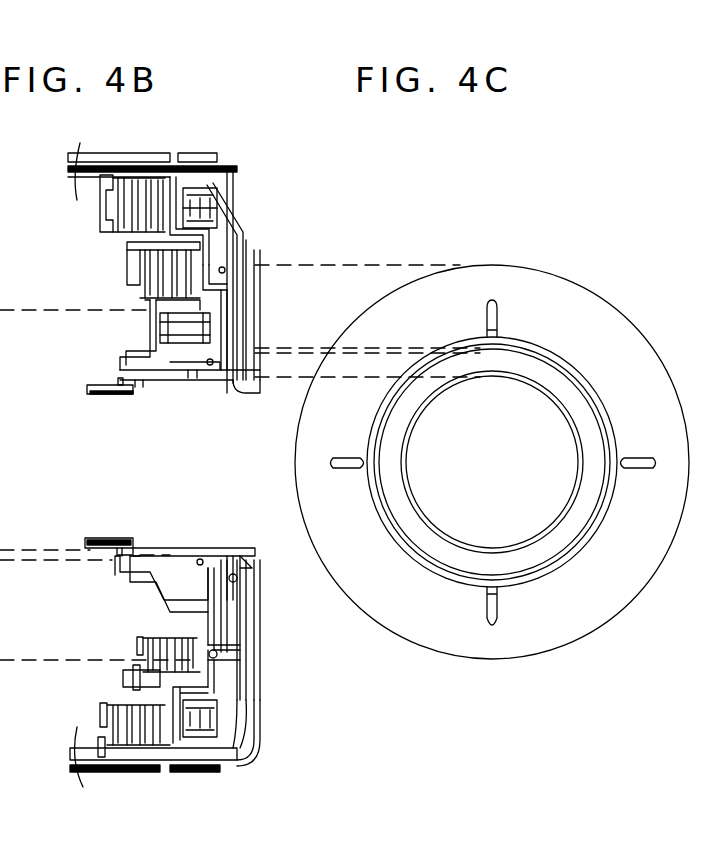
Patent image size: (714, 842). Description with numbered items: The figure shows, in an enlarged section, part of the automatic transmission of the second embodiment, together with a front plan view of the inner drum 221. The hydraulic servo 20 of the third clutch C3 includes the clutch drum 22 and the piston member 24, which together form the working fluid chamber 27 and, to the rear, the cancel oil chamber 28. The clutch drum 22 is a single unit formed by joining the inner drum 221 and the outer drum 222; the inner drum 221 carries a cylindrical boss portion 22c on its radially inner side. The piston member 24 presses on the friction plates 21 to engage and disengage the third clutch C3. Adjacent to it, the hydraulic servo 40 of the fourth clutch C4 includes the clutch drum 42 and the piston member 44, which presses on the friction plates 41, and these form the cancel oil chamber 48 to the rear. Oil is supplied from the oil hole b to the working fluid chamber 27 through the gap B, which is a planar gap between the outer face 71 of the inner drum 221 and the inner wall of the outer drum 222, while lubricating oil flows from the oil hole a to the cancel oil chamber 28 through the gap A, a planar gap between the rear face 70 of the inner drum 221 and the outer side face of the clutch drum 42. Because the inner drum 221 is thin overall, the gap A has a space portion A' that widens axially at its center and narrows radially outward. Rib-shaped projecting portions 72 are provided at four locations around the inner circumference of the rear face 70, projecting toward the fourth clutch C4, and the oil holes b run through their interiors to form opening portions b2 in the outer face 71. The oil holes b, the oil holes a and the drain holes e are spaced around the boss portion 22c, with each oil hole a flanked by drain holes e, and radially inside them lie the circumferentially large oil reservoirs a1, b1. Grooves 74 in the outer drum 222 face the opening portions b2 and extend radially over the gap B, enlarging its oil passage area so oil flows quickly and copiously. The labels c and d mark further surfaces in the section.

In FIG. 4B, the hydraulic servo 20 is at (252, 248).
In FIG. 4B, the friction plates 21 is at (88, 217).
In FIG. 4B, the clutch drum 22 is at (257, 673).
In FIG. 4B, the inner drum 221 is at (250, 570).
In FIG. 4C, the inner drum 221 is at (620, 180).
In FIG. 4B, the outer drum 222 is at (233, 730).
In FIG. 4B, the boss portion 22c is at (150, 380).
In FIG. 4B, the piston member 24 is at (213, 263).
In FIG. 4B, the working fluid chamber 27 is at (240, 677).
In FIG. 4B, the cancel oil chamber 28 is at (193, 727).
In FIG. 4B, the hydraulic servo 40 is at (233, 297).
In FIG. 4B, the friction plates 41 is at (125, 285).
In FIG. 4B, the clutch drum 42 is at (233, 627).
In FIG. 4B, the piston member 44 is at (232, 240).
In FIG. 4B, the cancel oil chamber 48 is at (175, 593).
In FIG. 4B, the rear face 70 is at (233, 590).
In FIG. 4C, the outer face 71 is at (593, 587).
In FIG. 4B, the projecting portions 72 is at (222, 370).
In FIG. 4B, the grooves 74 is at (265, 313).
In FIG. 4B, the gap A is at (258, 258).
In FIG. 4B, the space portion A' is at (252, 590).
In FIG. 4B, the gap B is at (253, 650).
In FIG. 4B, the oil hole a is at (233, 557).
In FIG. 4B, the oil reservoir a1 is at (213, 557).
In FIG. 4B, the oil hole b is at (233, 337).
In FIG. 4B, the oil reservoir b1 is at (262, 387).
In FIG. 4C, the opening portions b2 is at (676, 322).
In FIG. 4B, the surface c is at (192, 372).
In FIG. 4B, the surface d is at (123, 397).
In FIG. 4B, the drain holes e is at (247, 557).
In FIG. 4B, the third clutch C3 is at (88, 713).
In FIG. 4B, the fourth clutch C4 is at (125, 643).